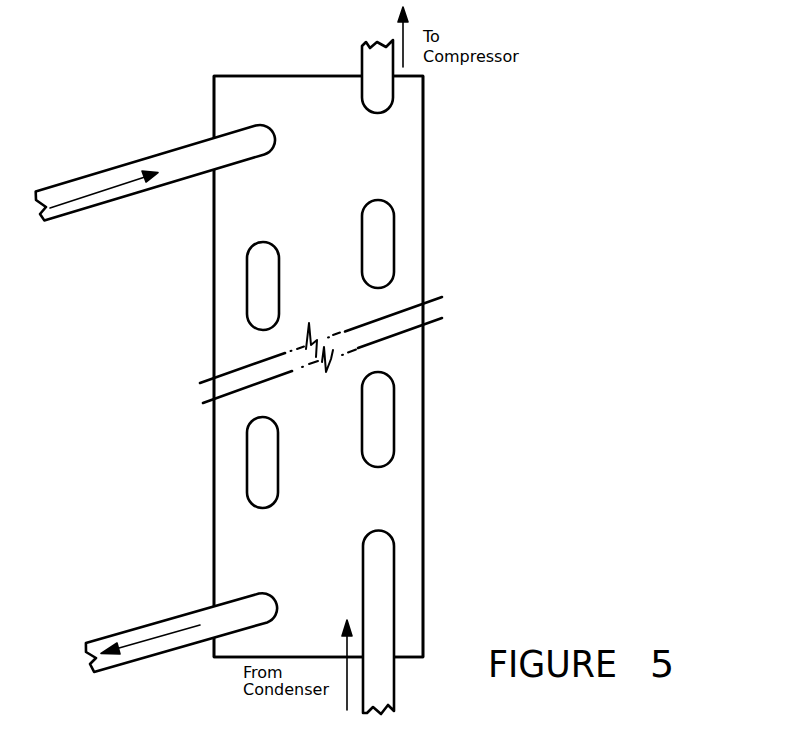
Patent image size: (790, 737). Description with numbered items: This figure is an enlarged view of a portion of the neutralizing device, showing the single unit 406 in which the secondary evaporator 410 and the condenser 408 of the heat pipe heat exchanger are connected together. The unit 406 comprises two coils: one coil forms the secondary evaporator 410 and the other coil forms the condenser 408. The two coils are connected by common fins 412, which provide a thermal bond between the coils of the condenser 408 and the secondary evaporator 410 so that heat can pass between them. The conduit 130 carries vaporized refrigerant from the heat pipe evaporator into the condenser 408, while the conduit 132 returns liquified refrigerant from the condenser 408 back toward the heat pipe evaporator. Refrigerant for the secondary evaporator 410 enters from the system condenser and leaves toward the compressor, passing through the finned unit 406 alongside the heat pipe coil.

The conduit 130 is at (100, 174).
The conduit 132 is at (163, 622).
The single unit 406 is at (424, 512).
The condenser 408 is at (258, 472).
The secondary evaporator 410 is at (394, 226).
The common fins 412 is at (400, 290).